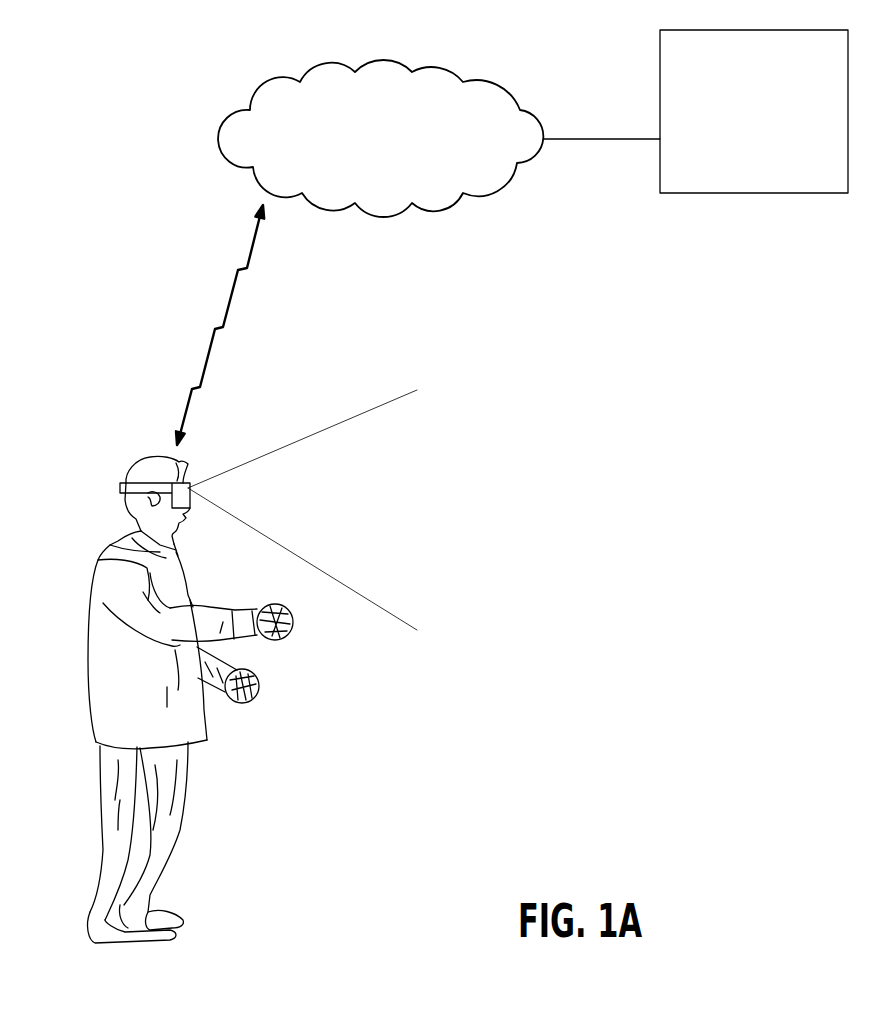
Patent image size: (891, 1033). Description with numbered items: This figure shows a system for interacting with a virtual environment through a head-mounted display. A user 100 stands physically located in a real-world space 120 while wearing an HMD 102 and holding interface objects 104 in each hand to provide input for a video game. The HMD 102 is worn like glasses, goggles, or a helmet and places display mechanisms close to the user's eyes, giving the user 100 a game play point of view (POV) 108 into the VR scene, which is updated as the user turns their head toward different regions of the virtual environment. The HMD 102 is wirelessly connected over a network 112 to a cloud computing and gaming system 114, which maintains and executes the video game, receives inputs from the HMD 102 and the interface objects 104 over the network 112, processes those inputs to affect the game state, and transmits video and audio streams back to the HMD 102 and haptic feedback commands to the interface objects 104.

The user 100 is at (102, 558).
The HMD 102 is at (127, 478).
The interface objects 104 is at (297, 625).
The game play point of view (POV) 108 is at (270, 455).
The network 112 is at (435, 212).
The cloud computing and gaming system 114 is at (764, 193).
The real-world space 120 is at (338, 890).